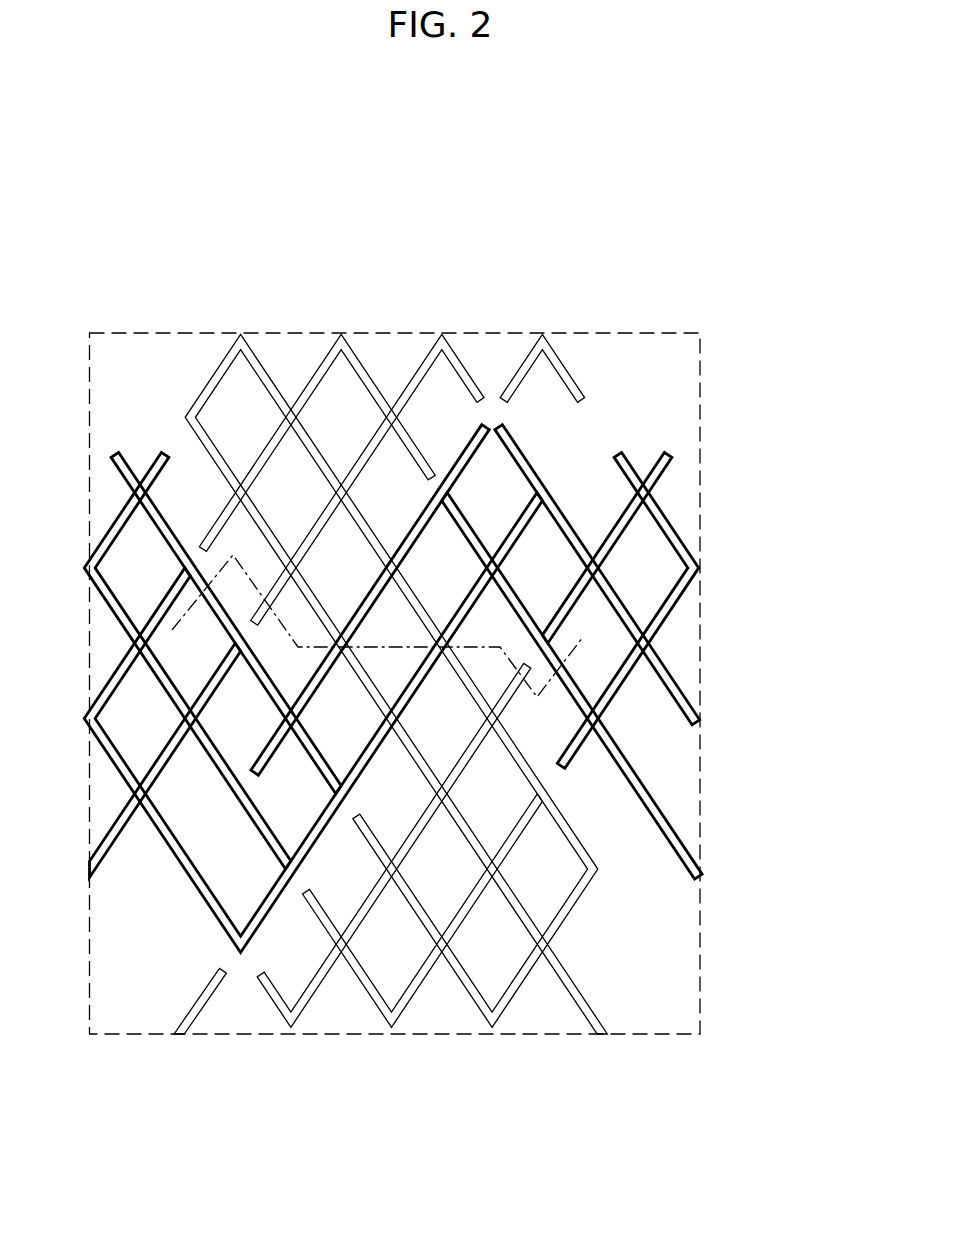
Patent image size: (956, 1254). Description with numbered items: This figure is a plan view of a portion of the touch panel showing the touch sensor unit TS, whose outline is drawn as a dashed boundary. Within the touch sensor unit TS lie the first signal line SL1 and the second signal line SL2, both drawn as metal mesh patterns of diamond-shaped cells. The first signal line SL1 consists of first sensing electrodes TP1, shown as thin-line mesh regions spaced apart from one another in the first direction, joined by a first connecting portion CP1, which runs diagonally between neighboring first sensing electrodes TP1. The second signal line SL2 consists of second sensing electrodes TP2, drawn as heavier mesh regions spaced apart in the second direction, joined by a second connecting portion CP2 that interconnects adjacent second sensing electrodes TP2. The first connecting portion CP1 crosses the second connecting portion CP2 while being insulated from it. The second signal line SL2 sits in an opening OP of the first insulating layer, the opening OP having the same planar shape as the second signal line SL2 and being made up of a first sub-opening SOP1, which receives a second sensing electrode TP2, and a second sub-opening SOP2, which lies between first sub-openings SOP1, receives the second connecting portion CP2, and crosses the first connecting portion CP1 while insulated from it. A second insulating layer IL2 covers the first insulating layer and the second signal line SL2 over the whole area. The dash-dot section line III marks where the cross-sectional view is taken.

The touch sensor unit TS is at (136, 273).
The second insulating layer IL2 is at (642, 953).
The first signal line SL1 is at (573, 246).
The first sensing electrode TP1 is at (368, 372).
The first connecting portion CP1 is at (418, 605).
The second signal line SL2 is at (771, 570).
The second sensing electrode TP2 is at (118, 670).
The second connecting portion CP2 is at (593, 723).
The opening OP is at (785, 367).
The first sub-opening SOP1 is at (620, 537).
The second sub-opening SOP2 is at (440, 646).
The section line III is at (183, 636).